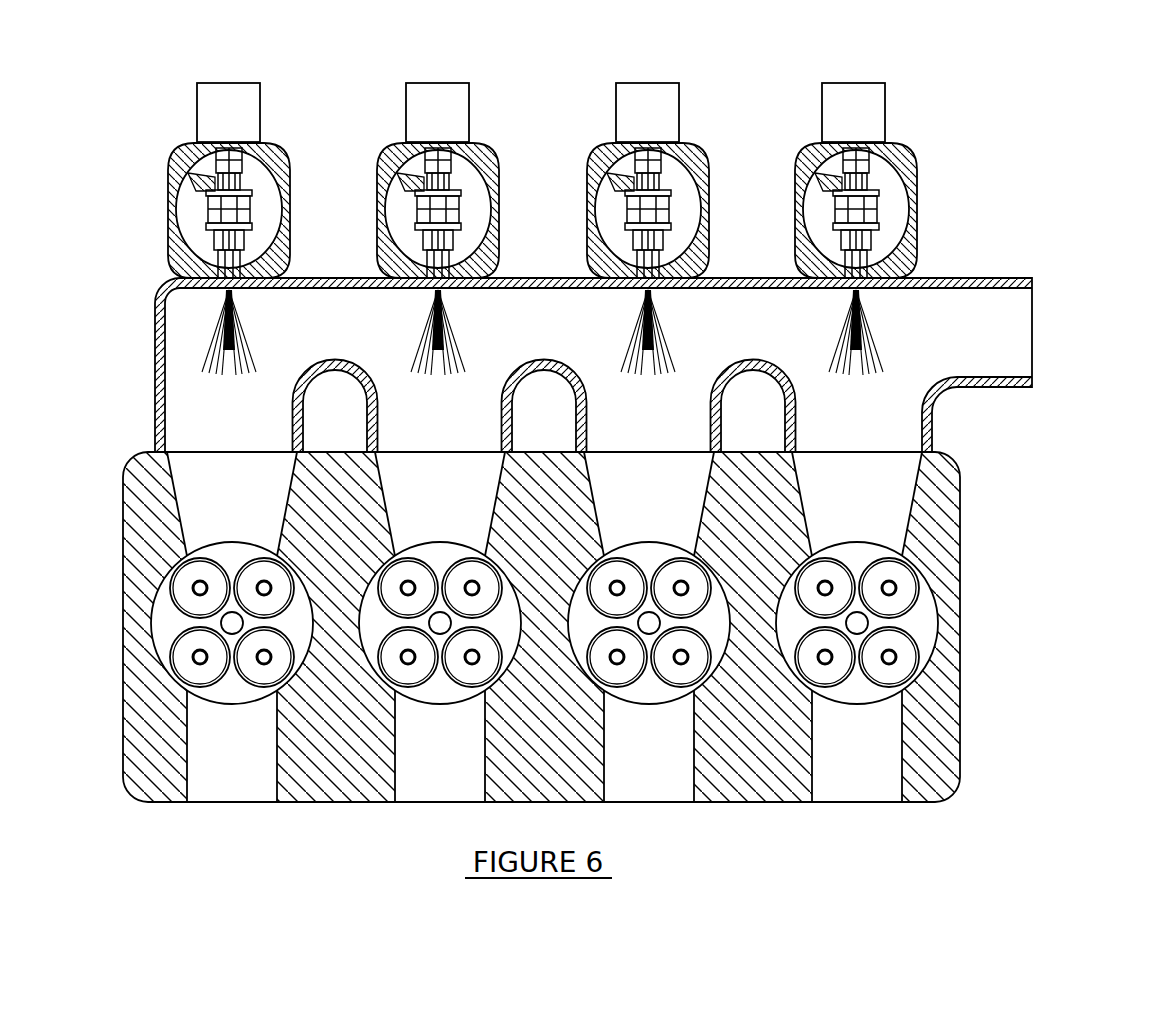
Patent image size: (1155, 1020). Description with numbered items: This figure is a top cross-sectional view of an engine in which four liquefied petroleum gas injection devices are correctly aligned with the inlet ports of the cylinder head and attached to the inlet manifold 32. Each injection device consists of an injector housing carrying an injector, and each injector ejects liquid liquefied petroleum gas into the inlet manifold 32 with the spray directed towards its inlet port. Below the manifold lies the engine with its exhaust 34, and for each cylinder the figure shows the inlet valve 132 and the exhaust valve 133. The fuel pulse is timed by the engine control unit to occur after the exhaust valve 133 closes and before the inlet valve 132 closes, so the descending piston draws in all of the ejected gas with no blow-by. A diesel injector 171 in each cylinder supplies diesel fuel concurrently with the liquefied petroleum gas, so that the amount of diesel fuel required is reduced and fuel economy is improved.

The inlet manifold 32 is at (980, 335).
The exhaust 34 is at (437, 752).
The inlet valve 132 is at (897, 573).
The exhaust valve 133 is at (903, 668).
The diesel injector 171 is at (645, 618).